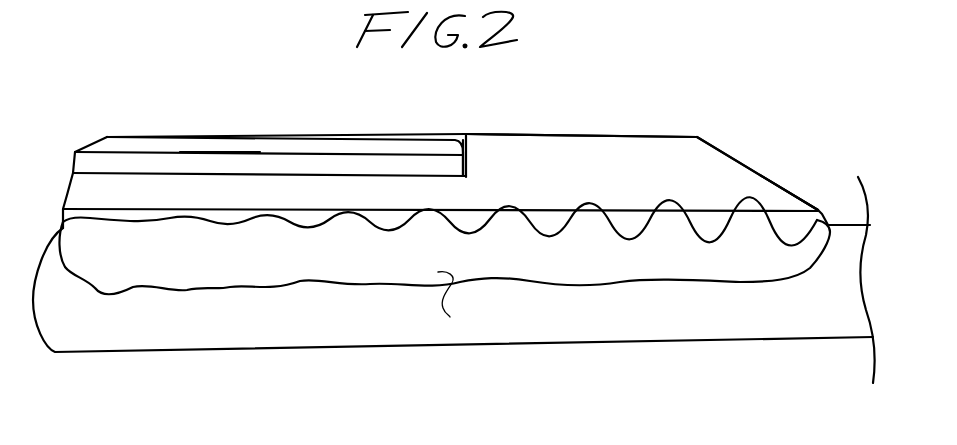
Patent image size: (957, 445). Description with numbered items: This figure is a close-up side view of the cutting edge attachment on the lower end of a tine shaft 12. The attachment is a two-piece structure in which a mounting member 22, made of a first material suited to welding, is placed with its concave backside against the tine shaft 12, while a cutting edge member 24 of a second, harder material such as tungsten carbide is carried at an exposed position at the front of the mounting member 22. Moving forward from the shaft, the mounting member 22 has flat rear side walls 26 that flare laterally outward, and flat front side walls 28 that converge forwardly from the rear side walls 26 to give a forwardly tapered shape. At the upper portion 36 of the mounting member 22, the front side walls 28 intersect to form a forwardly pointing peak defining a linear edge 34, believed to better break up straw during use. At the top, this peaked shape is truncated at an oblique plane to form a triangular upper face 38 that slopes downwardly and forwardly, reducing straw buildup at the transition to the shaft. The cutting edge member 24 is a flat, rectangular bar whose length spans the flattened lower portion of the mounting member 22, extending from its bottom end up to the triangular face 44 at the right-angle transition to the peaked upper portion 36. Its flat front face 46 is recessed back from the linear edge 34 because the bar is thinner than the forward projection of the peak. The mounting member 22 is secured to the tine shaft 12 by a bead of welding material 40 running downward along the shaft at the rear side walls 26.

The tine shaft 12 is at (557, 325).
The mounting member 22 is at (593, 135).
The cutting edge member 24 is at (166, 146).
The rear side walls 26 is at (225, 215).
The front side walls 28 is at (513, 173).
The linear edge 34 is at (548, 132).
The upper portion 36 is at (612, 155).
The triangular upper face 38 is at (747, 163).
The bead of welding material 40 is at (680, 263).
The triangular face 44 is at (460, 140).
The front face 46 is at (189, 147).